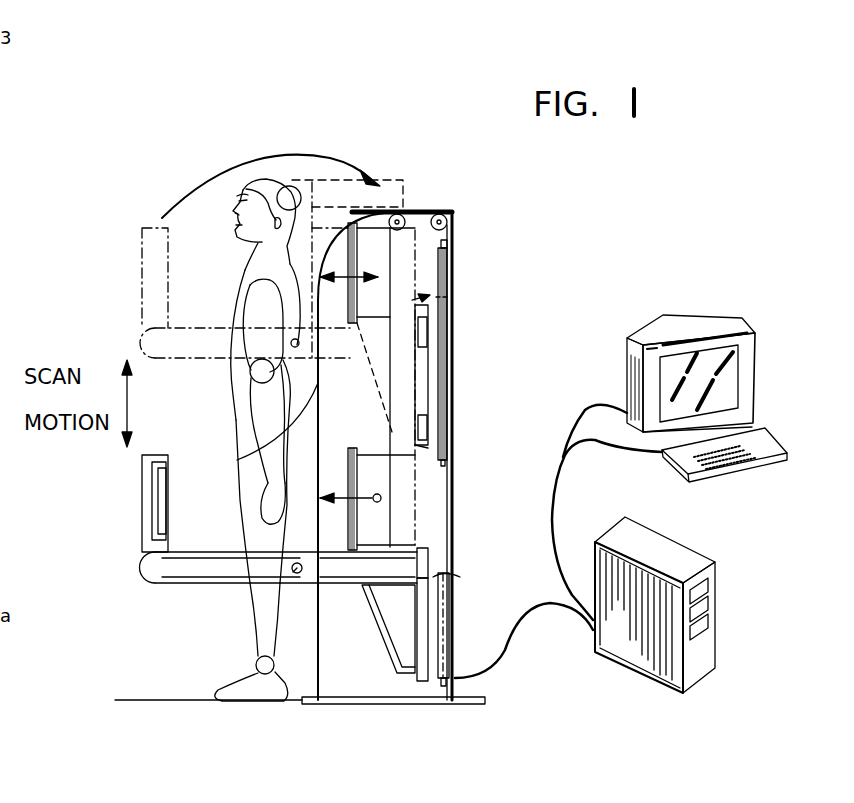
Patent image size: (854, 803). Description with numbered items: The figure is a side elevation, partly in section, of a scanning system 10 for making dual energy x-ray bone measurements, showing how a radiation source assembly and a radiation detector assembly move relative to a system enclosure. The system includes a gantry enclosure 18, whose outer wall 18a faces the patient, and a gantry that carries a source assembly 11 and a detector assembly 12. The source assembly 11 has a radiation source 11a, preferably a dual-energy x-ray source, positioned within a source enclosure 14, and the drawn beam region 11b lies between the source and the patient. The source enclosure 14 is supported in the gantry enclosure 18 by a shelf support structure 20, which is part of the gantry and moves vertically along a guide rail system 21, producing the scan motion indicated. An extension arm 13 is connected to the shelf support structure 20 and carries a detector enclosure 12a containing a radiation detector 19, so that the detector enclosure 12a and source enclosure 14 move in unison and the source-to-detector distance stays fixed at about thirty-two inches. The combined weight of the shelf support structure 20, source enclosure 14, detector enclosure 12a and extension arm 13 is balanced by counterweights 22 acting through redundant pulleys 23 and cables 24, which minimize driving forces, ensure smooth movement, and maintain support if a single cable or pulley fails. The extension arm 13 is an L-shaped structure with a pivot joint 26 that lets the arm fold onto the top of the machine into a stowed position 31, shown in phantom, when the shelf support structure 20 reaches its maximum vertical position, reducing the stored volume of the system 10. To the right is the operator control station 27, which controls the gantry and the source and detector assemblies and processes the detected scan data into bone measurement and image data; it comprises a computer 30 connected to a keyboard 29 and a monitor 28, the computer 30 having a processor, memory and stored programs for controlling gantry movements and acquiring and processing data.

The scanning system 10 is at (432, 106).
The source assembly 11 is at (365, 228).
The radiation source 11a is at (447, 246).
The lower beam support 11b is at (408, 534).
The detector assembly 12 is at (142, 553).
The detector enclosure 12a is at (158, 454).
The extension arm 13 is at (168, 584).
The source enclosure 14 is at (446, 296).
The gantry enclosure 18 is at (430, 210).
The outer wall 18a is at (238, 460).
The radiation detector 19 is at (142, 478).
The shelf support structure 20 is at (410, 622).
The guide rail system 21 is at (430, 546).
The counterweights 22 is at (455, 402).
The pulleys 23 is at (452, 212).
The cables 24 is at (392, 381).
The pivot joint 26 is at (293, 574).
The operator control station 27 is at (680, 298).
The monitor 28 is at (717, 320).
The keyboard 29 is at (762, 443).
The computer 30 is at (700, 558).
The stowed position 31 is at (317, 157).